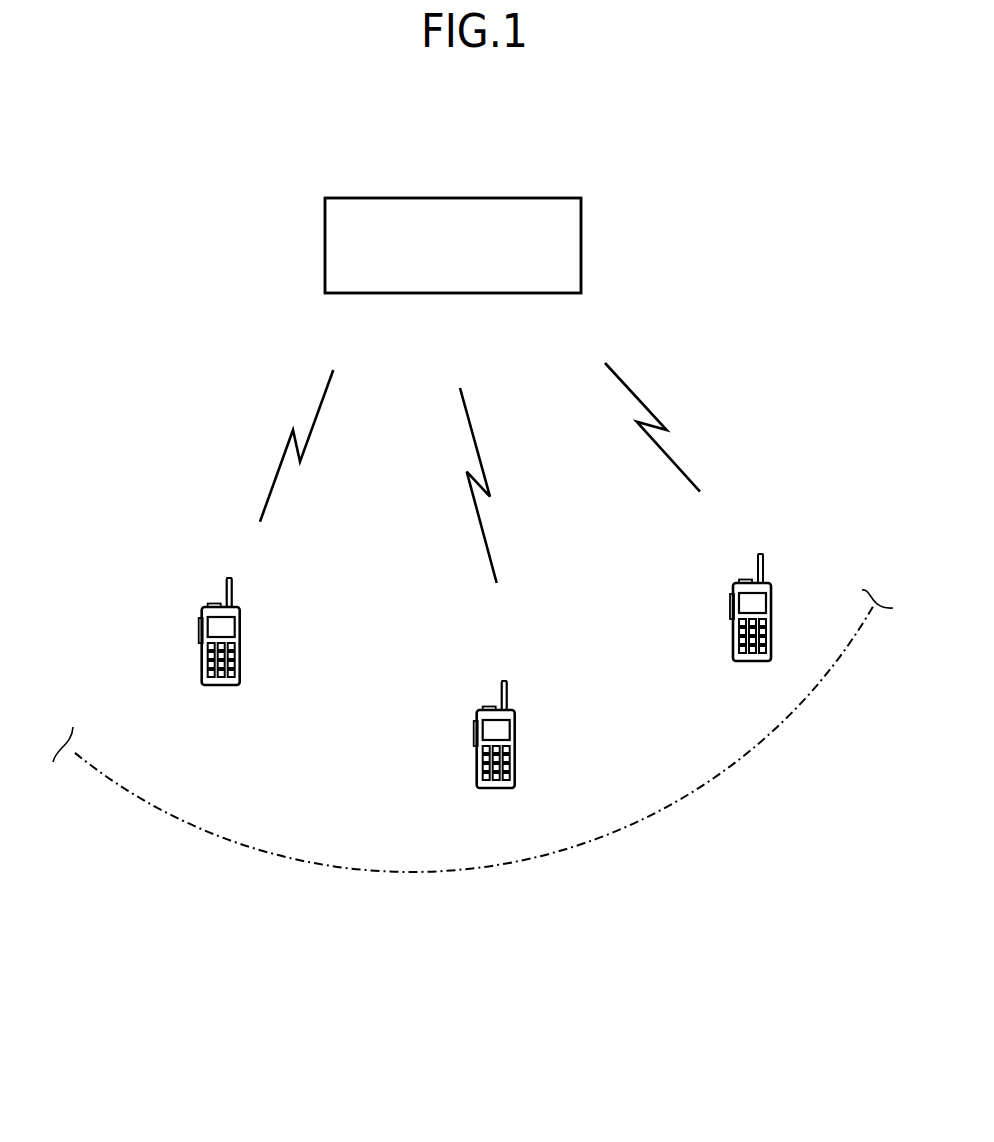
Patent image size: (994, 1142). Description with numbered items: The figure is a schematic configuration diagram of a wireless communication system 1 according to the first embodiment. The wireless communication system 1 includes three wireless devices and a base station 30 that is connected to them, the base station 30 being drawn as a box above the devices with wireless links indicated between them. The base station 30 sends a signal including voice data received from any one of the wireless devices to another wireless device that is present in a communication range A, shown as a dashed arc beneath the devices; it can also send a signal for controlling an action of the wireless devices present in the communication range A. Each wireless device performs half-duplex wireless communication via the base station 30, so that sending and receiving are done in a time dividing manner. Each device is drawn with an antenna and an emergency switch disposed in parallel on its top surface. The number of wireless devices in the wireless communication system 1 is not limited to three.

The wireless communication system 1 is at (694, 181).
The base station 30 is at (528, 197).
The communication range A is at (408, 873).